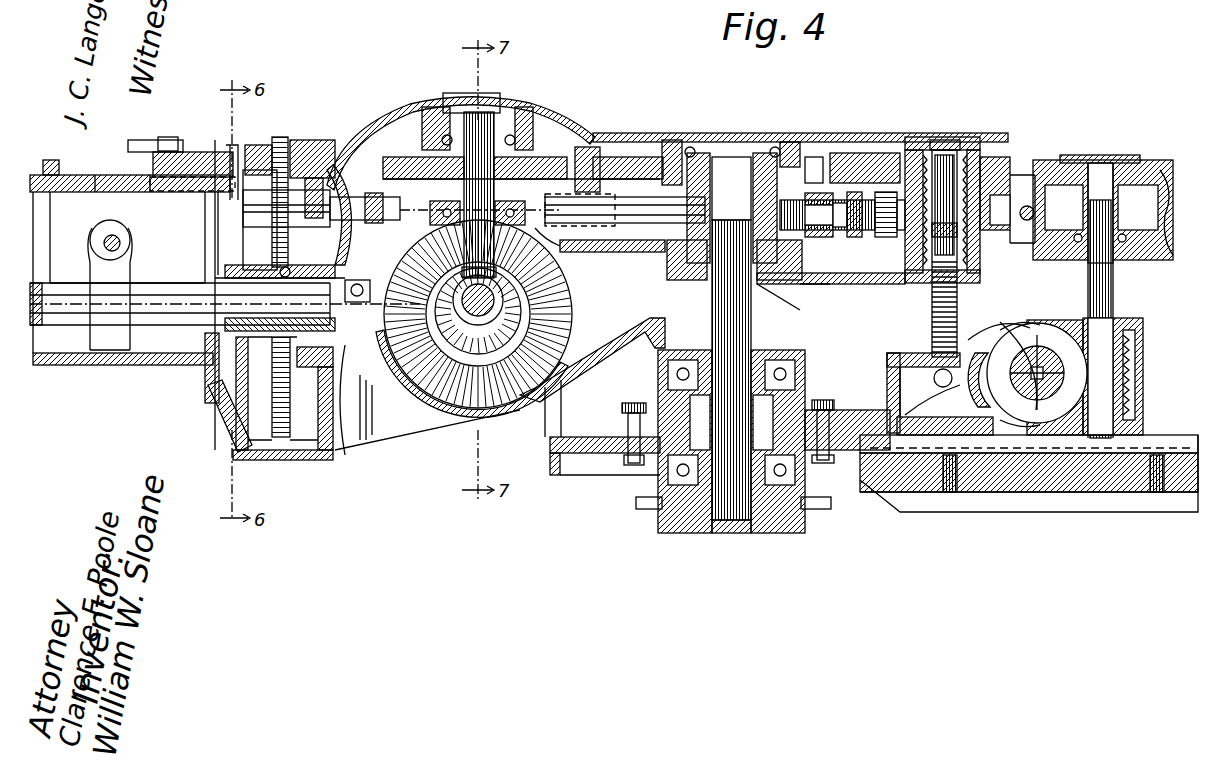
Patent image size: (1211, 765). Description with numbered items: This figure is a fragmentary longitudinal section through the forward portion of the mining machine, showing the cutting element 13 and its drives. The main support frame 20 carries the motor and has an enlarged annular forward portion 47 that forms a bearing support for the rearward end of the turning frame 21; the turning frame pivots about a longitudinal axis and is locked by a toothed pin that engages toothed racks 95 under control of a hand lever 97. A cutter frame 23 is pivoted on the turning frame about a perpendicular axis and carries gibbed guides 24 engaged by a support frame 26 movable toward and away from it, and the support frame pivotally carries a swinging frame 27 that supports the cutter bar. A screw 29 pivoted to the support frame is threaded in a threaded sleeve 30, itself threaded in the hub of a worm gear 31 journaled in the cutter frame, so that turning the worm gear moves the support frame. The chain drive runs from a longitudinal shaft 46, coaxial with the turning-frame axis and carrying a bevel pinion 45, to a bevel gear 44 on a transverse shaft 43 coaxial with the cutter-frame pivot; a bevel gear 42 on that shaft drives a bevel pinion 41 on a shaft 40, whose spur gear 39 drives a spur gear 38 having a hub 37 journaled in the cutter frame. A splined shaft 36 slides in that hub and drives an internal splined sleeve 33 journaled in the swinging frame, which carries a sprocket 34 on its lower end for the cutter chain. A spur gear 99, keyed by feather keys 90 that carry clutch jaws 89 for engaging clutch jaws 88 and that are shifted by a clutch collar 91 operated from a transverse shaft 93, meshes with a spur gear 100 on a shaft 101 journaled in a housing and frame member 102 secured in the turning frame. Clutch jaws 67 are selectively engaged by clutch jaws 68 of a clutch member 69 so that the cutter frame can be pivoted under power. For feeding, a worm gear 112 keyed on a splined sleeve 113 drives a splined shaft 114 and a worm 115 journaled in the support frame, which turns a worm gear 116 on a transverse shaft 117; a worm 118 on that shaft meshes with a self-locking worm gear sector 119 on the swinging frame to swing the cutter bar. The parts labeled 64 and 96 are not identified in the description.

The cutting element 13 is at (686, 132).
The main support frame 20 is at (98, 175).
The turning or positioning frame 21 is at (397, 118).
The cutter frame 23 is at (556, 126).
The gibbed guides 24 is at (545, 425).
The support frame 26 is at (887, 370).
The swinging frame 27 is at (606, 455).
The threaded shaft or screw 29 is at (931, 322).
The threaded sleeve 30 is at (978, 157).
The worm gear 31 is at (1012, 176).
The internal splined sleeve 33 is at (780, 355).
The sprocket 34 is at (655, 510).
The splined shaft 36 is at (712, 338).
The hub 37 is at (736, 155).
The spur gear 38 is at (623, 152).
The spur gear 39 is at (420, 130).
The shaft 40 is at (476, 100).
The bevel pinion 41 is at (572, 276).
The bevel gear 42 is at (590, 305).
The shaft 43 is at (432, 400).
The bevel gear 44 is at (412, 396).
The bevel pinion 45 is at (365, 345).
The shaft 46 is at (226, 267).
The enlarged annular forward portion 47 is at (240, 450).
The pinion 64 is at (886, 238).
The clutch jaws 67 is at (852, 237).
The clutch jaws 68 is at (815, 237).
The clutch member 69 is at (826, 193).
The clutch jaws 88 is at (235, 410).
The clutch jaws 89 is at (210, 382).
The feather keys 90 is at (205, 360).
The clutch collar 91 is at (85, 353).
The shaft 93 is at (116, 232).
The toothed sectors or racks 95 is at (230, 160).
The bracket 96 is at (212, 152).
The hand lever 97 is at (160, 140).
The spur gear 99 is at (240, 420).
The spur gear 100 is at (243, 230).
The shaft 101 is at (277, 140).
The housing and frame member 102 is at (305, 140).
The worm gear 112 is at (1148, 168).
The splined sleeve 113 is at (1095, 160).
The splined shaft 114 is at (1113, 291).
The worm 115 is at (1143, 372).
The worm gear 116 is at (1052, 323).
The transverse shaft 117 is at (1040, 425).
The worm 118 is at (1000, 340).
The worm gear sector 119 is at (978, 345).